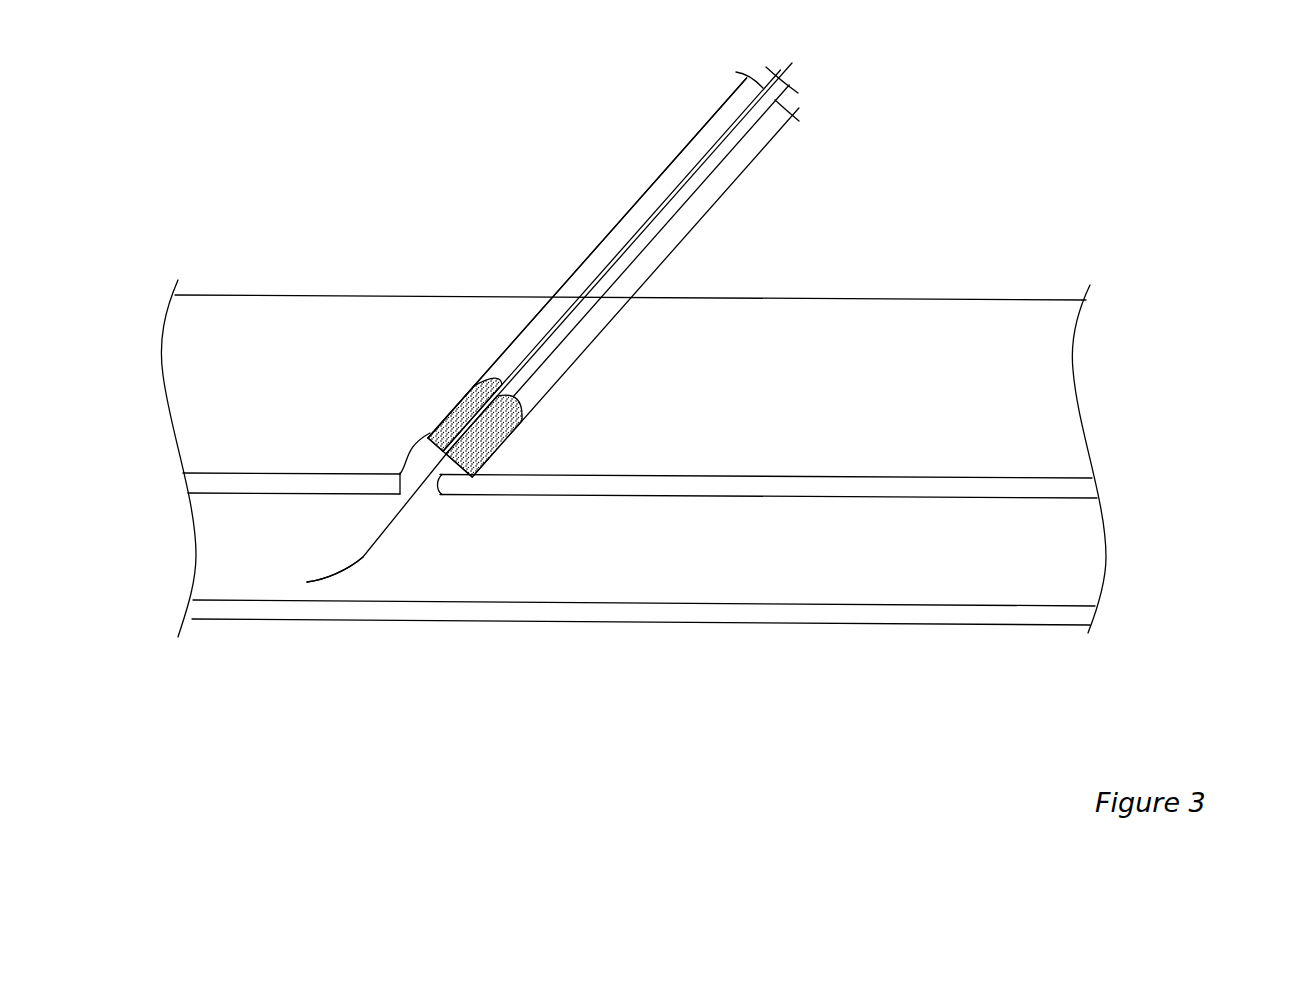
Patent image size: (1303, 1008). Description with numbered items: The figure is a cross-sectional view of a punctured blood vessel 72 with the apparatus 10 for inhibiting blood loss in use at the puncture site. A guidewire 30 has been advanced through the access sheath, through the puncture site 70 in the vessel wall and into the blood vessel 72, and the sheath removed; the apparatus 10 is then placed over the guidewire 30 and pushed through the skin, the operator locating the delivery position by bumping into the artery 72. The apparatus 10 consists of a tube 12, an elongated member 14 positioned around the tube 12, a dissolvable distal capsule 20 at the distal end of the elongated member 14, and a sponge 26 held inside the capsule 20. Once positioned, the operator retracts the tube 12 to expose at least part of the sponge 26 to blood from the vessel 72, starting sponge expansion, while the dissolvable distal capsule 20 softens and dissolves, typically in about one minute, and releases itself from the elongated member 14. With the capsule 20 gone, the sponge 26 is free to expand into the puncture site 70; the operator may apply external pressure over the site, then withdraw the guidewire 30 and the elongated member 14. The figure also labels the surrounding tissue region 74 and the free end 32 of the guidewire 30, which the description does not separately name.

The apparatus 10 is at (587, 270).
The tube 12 is at (552, 355).
The elongated member 14 is at (613, 243).
The dissolvable distal capsule 20 is at (446, 413).
The sponge 26 is at (500, 437).
The guidewire 30 is at (363, 557).
The guide wire distal end 32 is at (307, 580).
The puncture site 70 is at (428, 488).
The blood vessel 72 is at (762, 475).
The blood vessel 74 is at (314, 335).